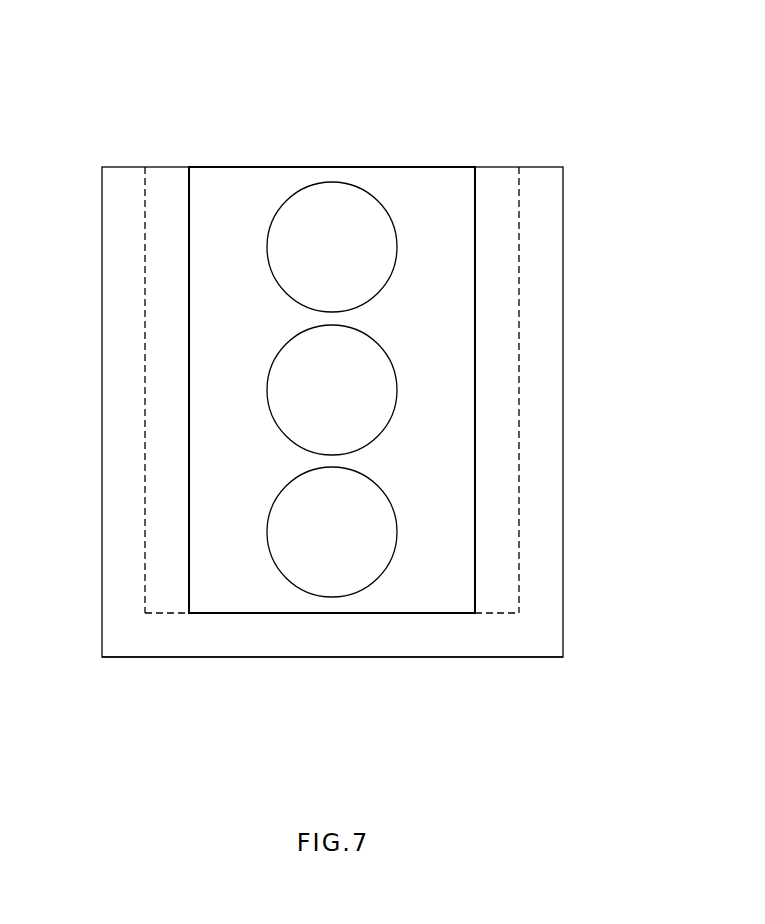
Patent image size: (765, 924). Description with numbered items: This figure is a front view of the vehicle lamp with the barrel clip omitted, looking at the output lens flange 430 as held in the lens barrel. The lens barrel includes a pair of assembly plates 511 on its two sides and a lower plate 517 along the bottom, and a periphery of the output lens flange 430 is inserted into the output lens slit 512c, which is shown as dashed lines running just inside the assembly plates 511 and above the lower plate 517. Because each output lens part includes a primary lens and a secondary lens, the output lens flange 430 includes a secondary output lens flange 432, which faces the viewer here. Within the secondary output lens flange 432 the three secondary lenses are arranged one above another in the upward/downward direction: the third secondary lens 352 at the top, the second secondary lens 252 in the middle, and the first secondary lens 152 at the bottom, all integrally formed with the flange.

The output lens flange 430 is at (237, 98).
The secondary output lens flange 432 is at (236, 183).
The assembly plate 511 is at (118, 343).
The output lens slit 512c is at (145, 183).
The lower plate 517 is at (335, 645).
The (3-2)-th lens 352 is at (383, 247).
The (2-2)-th lens 252 is at (383, 390).
The (1-2)-th lens 152 is at (383, 532).